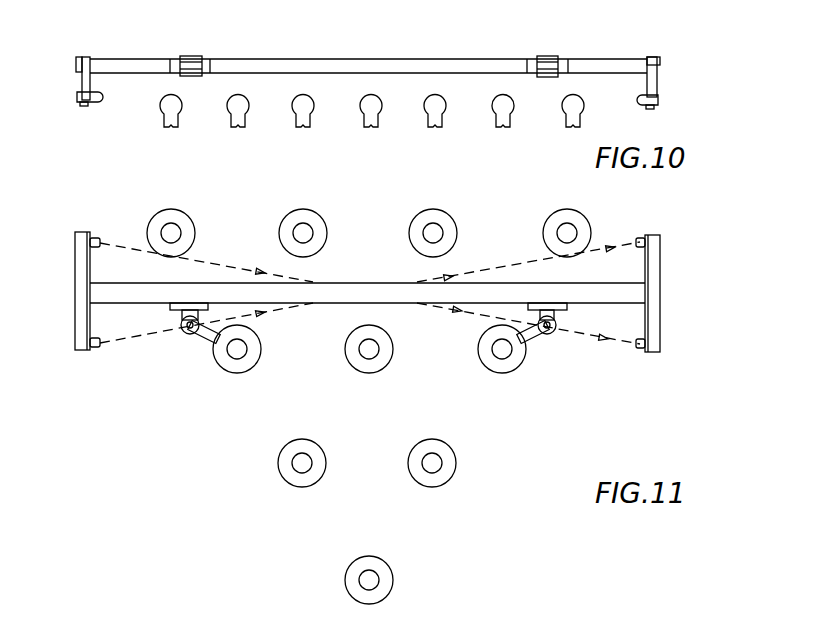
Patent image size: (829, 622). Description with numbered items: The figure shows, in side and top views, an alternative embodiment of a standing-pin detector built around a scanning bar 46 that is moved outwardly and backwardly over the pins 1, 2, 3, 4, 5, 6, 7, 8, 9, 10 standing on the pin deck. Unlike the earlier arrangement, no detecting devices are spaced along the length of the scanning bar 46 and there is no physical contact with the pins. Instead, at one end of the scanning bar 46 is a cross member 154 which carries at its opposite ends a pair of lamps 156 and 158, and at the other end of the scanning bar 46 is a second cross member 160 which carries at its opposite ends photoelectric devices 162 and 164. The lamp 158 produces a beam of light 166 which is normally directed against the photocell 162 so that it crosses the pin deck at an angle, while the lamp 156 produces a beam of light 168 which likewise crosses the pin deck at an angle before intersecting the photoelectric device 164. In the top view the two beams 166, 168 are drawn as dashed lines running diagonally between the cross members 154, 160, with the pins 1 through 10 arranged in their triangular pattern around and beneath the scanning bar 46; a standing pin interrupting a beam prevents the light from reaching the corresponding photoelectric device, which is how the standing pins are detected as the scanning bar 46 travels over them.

In FIG. 10, the scanning bar 46 is at (392, 60).
In FIG. 11, the scanning bar 46 is at (351, 288).
In FIG. 10, the cross member 154 is at (80, 56).
In FIG. 11, the cross member 154 is at (90, 270).
In FIG. 11, the lamp 156 is at (107, 208).
In FIG. 10, the lamp 158 is at (97, 104).
In FIG. 11, the lamp 158 is at (100, 346).
In FIG. 10, the second cross member 160 is at (658, 57).
In FIG. 11, the second cross member 160 is at (648, 268).
In FIG. 11, the photoelectric device 162 is at (640, 238).
In FIG. 10, the photoelectric device 164 is at (641, 105).
In FIG. 11, the photoelectric device 164 is at (640, 347).
In FIG. 11, the beam of light 166 is at (283, 309).
In FIG. 11, the beam of light 168 is at (289, 276).
In FIG. 10, the pin 1 is at (361, 114).
In FIG. 11, the pin 1 is at (346, 580).
In FIG. 10, the pin 2 is at (293, 114).
In FIG. 11, the pin 2 is at (285, 480).
In FIG. 10, the pin 3 is at (425, 114).
In FIG. 11, the pin 3 is at (415, 480).
In FIG. 10, the pin 4 is at (228, 114).
In FIG. 11, the pin 4 is at (220, 367).
In FIG. 11, the pin 5 is at (352, 366).
In FIG. 10, the pin 6 is at (493, 114).
In FIG. 11, the pin 6 is at (485, 366).
In FIG. 10, the pin 7 is at (160, 114).
In FIG. 11, the pin 7 is at (156, 216).
In FIG. 11, the pin 8 is at (279, 233).
In FIG. 11, the pin 9 is at (410, 233).
In FIG. 10, the pin 10 is at (563, 114).
In FIG. 11, the pin 10 is at (544, 233).